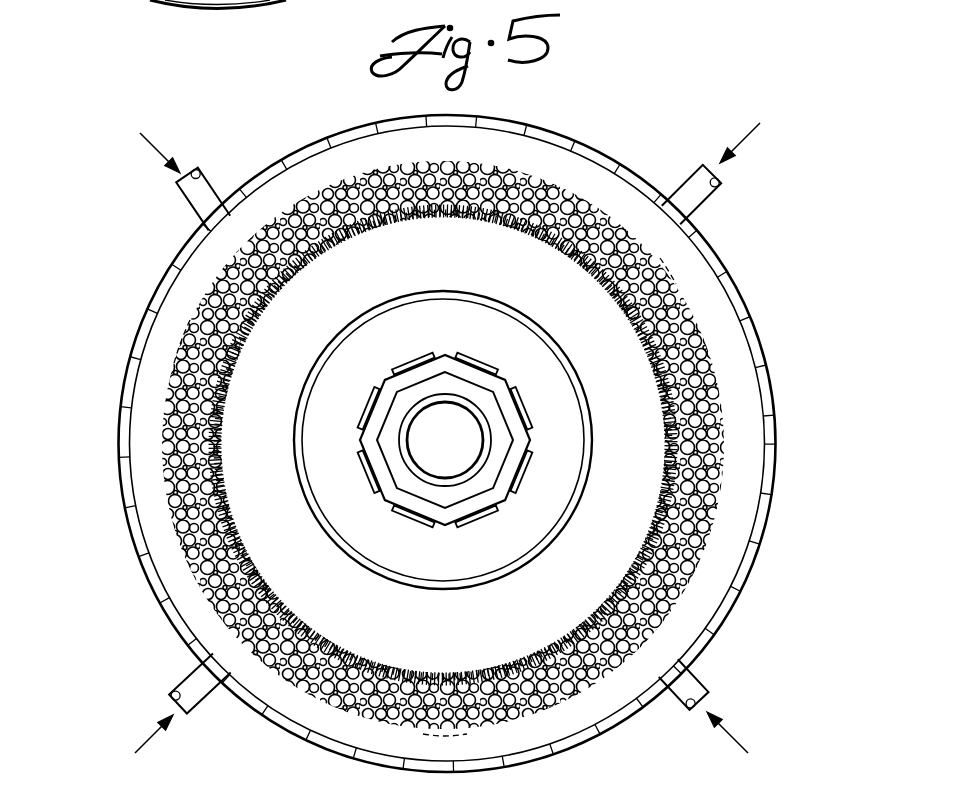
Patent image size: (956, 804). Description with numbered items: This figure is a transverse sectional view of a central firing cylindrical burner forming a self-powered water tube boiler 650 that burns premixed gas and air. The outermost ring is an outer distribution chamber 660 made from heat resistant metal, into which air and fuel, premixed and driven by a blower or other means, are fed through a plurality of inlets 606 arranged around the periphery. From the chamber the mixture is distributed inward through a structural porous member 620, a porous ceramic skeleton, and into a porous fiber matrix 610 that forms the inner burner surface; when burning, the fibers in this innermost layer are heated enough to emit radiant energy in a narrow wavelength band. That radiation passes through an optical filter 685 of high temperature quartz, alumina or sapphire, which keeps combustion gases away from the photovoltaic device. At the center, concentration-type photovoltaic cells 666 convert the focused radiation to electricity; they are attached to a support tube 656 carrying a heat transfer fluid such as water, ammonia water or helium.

The inlets 606 is at (703, 678).
The porous fiber matrix 610 is at (677, 295).
The porous material 620 is at (612, 212).
The self-powered water tube boiler 650 is at (122, 342).
The support tube 656 is at (527, 437).
The outer distribution chamber 660 is at (160, 442).
The photovoltaic cells 666 is at (540, 473).
The optical filter 685 is at (537, 558).